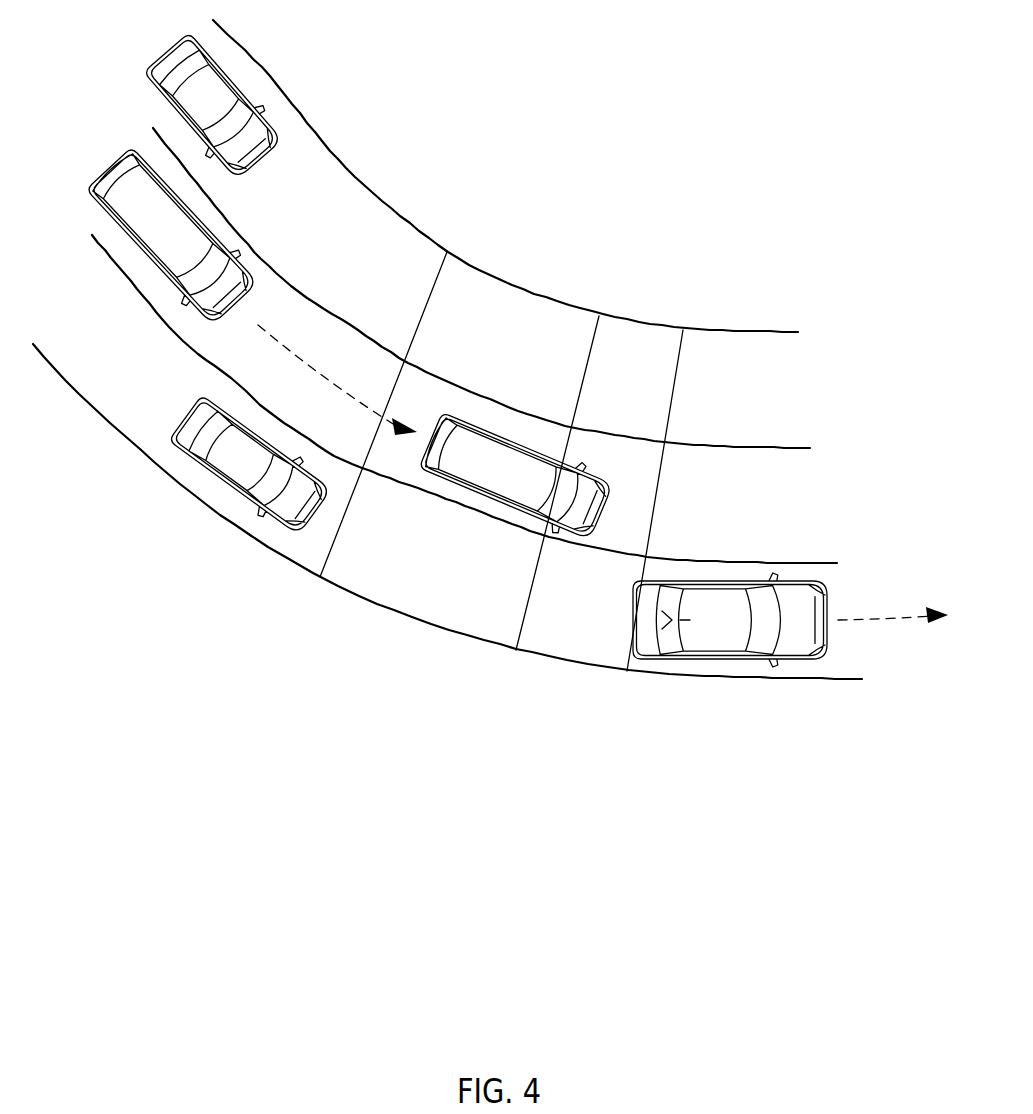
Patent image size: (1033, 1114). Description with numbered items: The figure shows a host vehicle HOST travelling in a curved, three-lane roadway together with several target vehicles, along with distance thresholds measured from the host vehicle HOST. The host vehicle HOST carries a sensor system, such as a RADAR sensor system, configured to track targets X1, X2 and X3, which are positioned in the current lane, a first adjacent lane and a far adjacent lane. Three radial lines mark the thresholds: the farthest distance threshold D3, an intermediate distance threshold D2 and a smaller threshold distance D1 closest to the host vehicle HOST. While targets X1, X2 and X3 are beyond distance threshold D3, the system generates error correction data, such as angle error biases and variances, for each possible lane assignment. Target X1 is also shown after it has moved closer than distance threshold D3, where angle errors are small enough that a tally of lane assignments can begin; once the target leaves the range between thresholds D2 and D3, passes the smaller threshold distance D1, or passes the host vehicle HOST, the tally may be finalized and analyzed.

The target X1 is at (348, 344).
The target X2 is at (250, 465).
The target X3 is at (213, 105).
The threshold distance D1 is at (644, 522).
The distance range threshold D2 is at (549, 509).
The distance threshold D3 is at (368, 435).
The host vehicle HOST is at (790, 620).